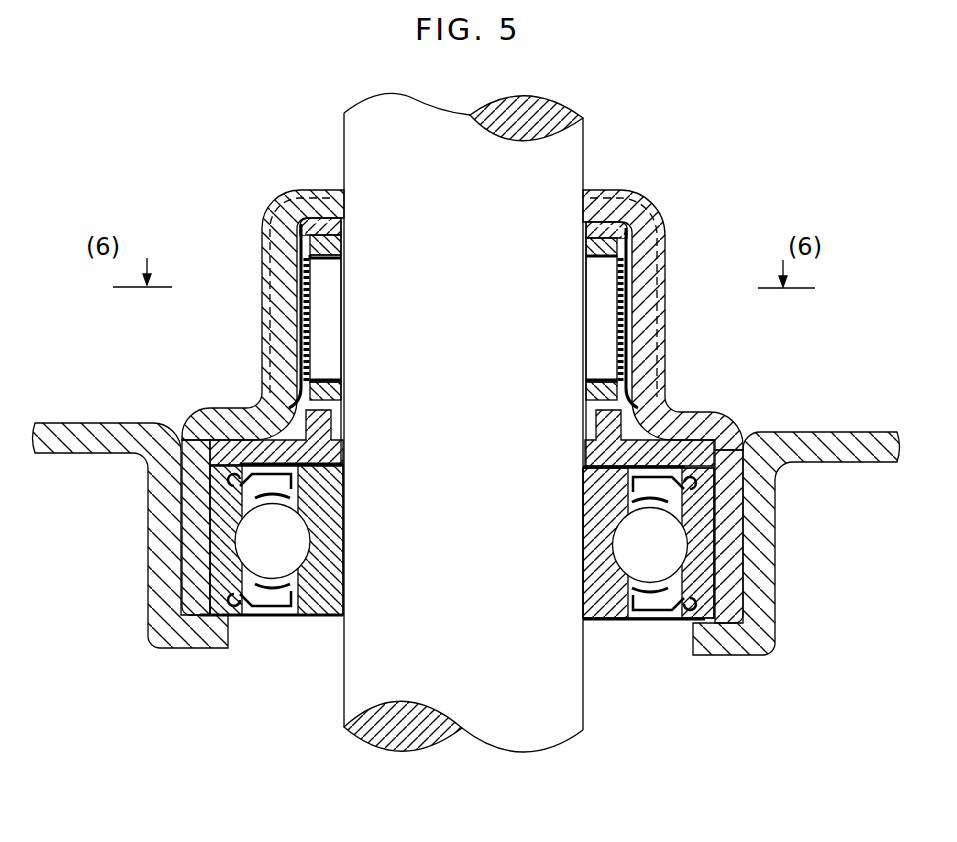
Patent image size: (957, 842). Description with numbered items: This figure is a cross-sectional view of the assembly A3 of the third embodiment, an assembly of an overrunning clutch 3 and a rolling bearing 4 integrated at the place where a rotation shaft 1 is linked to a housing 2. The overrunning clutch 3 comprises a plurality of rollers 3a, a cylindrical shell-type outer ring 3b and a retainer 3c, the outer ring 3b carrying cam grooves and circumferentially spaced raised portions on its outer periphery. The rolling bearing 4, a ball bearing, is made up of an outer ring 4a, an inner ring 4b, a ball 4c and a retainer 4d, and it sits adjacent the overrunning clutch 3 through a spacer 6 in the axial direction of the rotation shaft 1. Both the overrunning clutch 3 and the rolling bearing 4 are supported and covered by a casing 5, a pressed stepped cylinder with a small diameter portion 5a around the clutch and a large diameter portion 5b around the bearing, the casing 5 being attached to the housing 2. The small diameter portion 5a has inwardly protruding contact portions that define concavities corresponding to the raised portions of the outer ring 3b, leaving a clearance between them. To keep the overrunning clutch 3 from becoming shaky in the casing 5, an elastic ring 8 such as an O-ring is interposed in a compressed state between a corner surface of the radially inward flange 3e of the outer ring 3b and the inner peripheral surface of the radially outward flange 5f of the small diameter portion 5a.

The rotation shaft 1 is at (527, 733).
The housing 2 is at (163, 600).
The overrunning clutch 3 is at (640, 262).
The rollers 3a is at (598, 314).
The outer ring 3b is at (620, 365).
The retainer 3c is at (630, 268).
The radially inward flange 3e is at (333, 190).
The rolling bearing 4 is at (720, 550).
The outer ring 4a is at (687, 615).
The inner ring 4b is at (612, 608).
The ball 4c is at (655, 572).
The retainer 4d is at (643, 612).
The casing 5 is at (237, 405).
The small diameter portion 5a is at (277, 272).
The large diameter portion 5b is at (195, 538).
The radially outward flange 5f is at (596, 190).
The spacer 6 is at (713, 427).
The elastic ring 8 is at (605, 229).
The assembly A3 is at (290, 633).